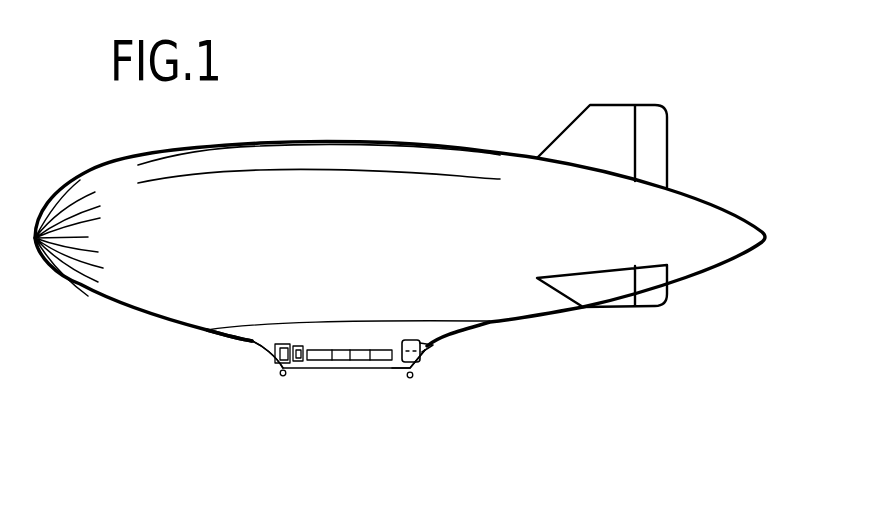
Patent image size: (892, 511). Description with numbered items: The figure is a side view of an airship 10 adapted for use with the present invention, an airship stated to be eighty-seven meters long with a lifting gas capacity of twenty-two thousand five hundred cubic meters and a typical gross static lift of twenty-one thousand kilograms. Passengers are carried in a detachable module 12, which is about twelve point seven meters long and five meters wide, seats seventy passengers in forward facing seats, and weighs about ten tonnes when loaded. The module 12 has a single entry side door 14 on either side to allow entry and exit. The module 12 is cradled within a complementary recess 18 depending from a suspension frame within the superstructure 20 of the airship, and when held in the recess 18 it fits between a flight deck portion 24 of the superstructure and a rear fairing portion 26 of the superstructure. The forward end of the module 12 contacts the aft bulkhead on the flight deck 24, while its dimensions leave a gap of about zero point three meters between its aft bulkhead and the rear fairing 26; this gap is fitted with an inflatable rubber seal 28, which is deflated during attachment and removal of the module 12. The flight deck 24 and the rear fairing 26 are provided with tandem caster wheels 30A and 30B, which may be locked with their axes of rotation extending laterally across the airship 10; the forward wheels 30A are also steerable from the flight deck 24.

The airship 10 is at (106, 163).
The detachable module 12 is at (368, 364).
The entry side door 14 is at (297, 370).
The complementary recess 18 is at (294, 345).
The superstructure 20 is at (251, 365).
The flight deck portion 24 is at (253, 345).
The rear fairing portion 26 is at (429, 345).
The inflatable rubber seal 28 is at (394, 366).
The forward caster wheels 30A is at (281, 374).
The rear caster wheels 30B is at (414, 376).